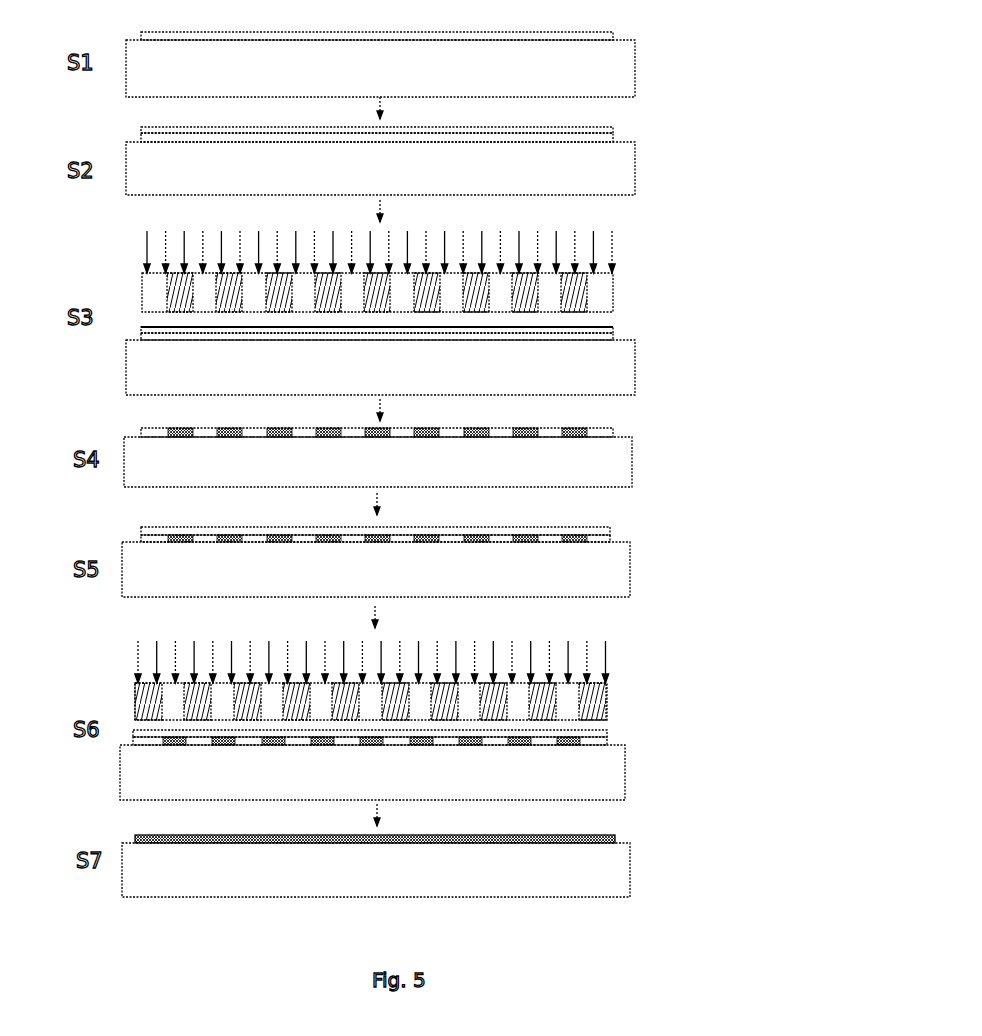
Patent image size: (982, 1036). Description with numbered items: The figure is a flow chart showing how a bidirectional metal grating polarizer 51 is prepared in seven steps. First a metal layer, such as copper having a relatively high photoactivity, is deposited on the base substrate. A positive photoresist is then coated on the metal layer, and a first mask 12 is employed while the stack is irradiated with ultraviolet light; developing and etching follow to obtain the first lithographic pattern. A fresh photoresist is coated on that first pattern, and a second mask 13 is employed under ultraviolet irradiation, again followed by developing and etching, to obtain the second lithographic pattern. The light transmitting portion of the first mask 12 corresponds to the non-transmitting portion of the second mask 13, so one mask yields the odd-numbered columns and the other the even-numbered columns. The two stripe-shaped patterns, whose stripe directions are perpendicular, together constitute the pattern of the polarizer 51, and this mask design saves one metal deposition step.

The first mask 12 is at (602, 292).
The second mask 13 is at (583, 700).
The first bidirectional metal grating polarizer 51 is at (433, 840).